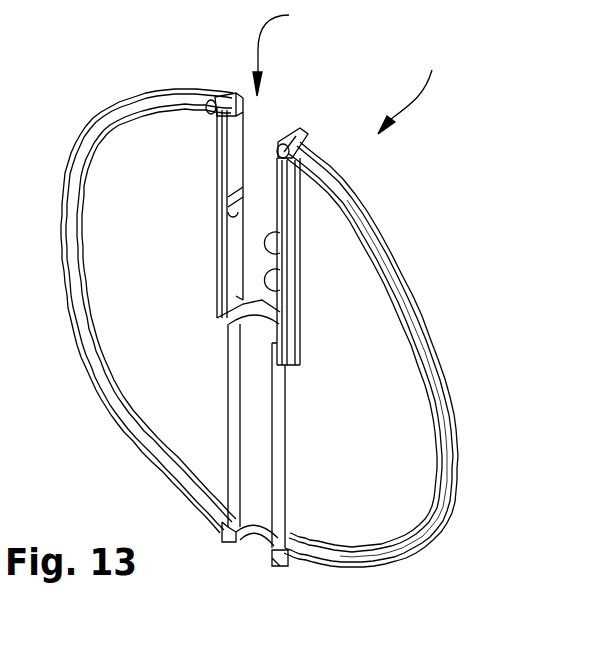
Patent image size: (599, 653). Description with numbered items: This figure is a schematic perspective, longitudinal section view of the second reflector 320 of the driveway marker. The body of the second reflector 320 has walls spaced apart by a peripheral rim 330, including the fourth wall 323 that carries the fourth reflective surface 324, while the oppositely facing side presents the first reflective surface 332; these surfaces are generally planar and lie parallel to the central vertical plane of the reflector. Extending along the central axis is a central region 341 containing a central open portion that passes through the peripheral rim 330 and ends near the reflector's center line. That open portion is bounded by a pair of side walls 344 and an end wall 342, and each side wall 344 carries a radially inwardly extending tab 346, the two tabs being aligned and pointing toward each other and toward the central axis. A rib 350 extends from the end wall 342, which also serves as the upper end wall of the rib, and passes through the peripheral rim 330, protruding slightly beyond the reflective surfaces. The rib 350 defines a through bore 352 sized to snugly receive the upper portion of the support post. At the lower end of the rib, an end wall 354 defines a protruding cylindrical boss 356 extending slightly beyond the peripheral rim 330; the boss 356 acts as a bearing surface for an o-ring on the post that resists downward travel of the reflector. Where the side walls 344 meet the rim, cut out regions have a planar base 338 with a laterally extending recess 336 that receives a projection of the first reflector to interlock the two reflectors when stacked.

The second reflector 320 is at (415, 90).
The fourth wall 323 is at (0, 15).
The fourth reflective surface 324 is at (0, 65).
The peripheral rim 330 is at (437, 363).
The first reflective surface 332 is at (182, 92).
The laterally extending recess 336 is at (212, 98).
The base 338 is at (213, 96).
The central region 341 is at (292, 48).
The end wall 342 is at (228, 305).
The side walls 344 is at (232, 276).
The tab 346 is at (268, 128).
The rib 350 is at (253, 437).
The through bore 352 is at (257, 490).
The end wall of the rib 354 is at (243, 543).
The cylindrical boss 356 is at (283, 568).